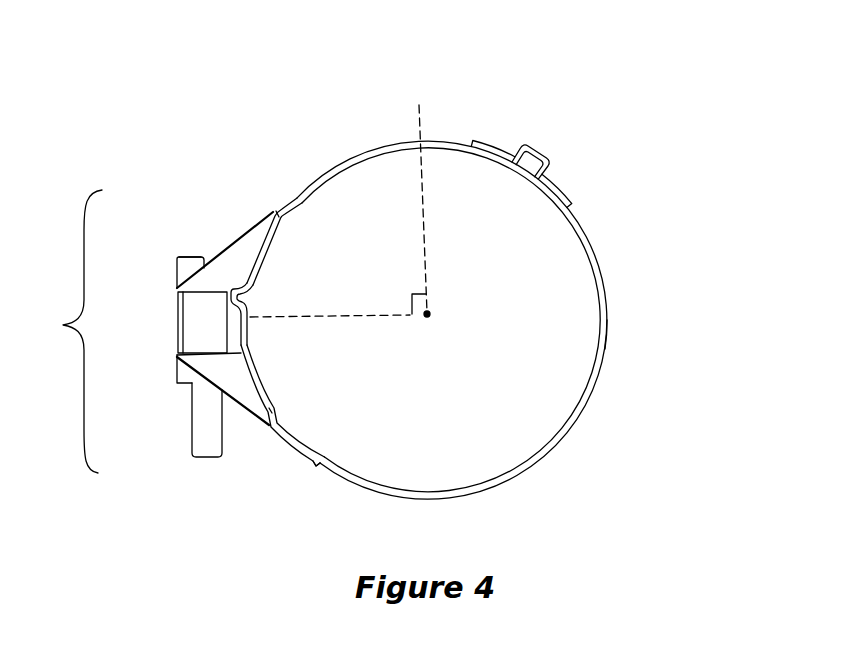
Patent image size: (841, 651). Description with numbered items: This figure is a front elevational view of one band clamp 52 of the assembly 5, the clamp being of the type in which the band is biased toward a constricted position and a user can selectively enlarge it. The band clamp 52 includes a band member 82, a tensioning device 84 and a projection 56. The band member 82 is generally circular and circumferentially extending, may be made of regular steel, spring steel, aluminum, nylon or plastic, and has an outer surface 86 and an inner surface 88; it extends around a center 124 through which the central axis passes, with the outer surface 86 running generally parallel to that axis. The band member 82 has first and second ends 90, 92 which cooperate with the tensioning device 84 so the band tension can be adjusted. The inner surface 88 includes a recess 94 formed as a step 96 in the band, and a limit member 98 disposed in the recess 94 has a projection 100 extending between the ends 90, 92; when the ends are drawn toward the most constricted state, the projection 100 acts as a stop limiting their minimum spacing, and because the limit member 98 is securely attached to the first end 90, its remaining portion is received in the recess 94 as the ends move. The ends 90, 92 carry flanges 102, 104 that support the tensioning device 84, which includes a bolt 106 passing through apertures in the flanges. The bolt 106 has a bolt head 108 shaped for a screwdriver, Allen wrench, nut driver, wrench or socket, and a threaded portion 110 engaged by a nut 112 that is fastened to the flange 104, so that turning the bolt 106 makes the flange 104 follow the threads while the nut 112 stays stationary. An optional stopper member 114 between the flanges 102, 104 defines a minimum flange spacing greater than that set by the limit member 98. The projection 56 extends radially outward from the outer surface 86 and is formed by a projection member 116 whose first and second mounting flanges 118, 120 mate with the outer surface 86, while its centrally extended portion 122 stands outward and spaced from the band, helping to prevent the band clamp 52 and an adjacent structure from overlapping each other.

The clamp assembly 5 is at (580, 72).
The band clamp 52 is at (719, 172).
The projection 56 is at (507, 80).
The band member 82 is at (574, 428).
The tensioning device 84 is at (65, 331).
The outer surface 86 is at (609, 340).
The inner surface 88 is at (598, 333).
The first end 90 is at (221, 160).
The second end 92 is at (246, 521).
The recess 94 is at (313, 437).
The step 96 is at (318, 472).
The limit member 98 is at (270, 248).
The projection 100 is at (248, 303).
The flange 102 is at (242, 230).
The flange 104 is at (247, 410).
The bolt 106 is at (175, 266).
The bolt head 108 is at (196, 253).
The threaded portion 110 is at (190, 433).
The nut 112 is at (177, 375).
The stopper member 114 is at (178, 317).
The projection member 116 is at (534, 146).
The first mounting flange 118 is at (483, 144).
The second mounting flange 120 is at (570, 200).
The centrally extended portion 122 is at (550, 167).
The center 124 is at (431, 322).